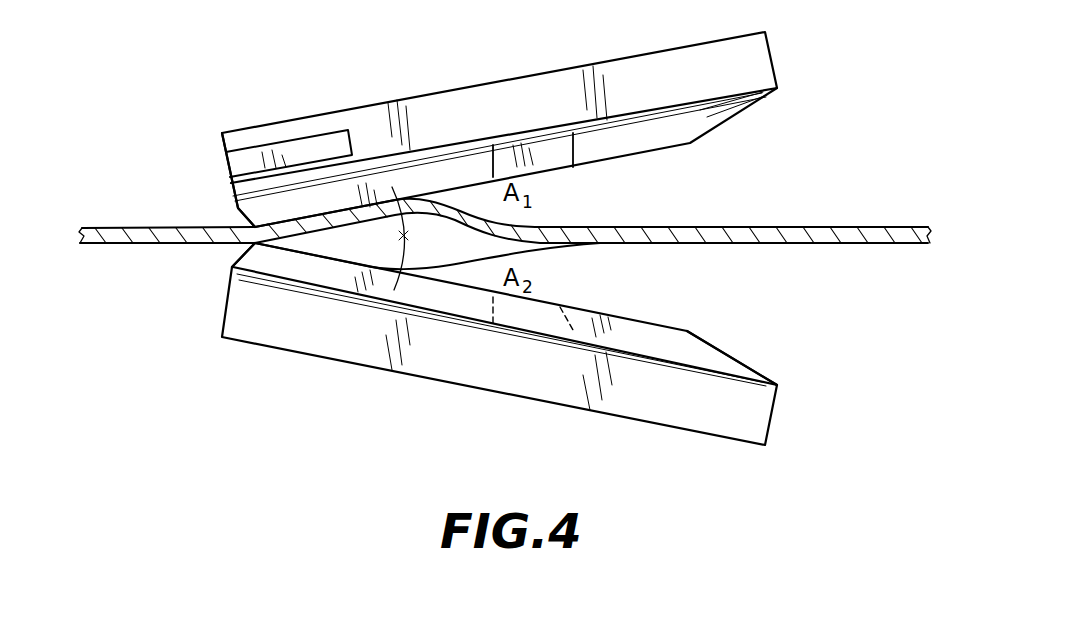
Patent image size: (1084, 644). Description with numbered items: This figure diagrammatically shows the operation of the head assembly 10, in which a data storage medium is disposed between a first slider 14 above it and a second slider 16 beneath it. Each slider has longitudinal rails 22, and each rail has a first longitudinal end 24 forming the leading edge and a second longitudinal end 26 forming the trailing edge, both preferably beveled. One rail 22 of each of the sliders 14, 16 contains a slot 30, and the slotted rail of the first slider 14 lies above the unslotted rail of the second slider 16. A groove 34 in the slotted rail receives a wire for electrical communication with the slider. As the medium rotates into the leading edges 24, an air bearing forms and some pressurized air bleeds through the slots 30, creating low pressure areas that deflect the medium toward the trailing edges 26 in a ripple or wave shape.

The head assembly 10 is at (383, 52).
The first slider 14 is at (757, 63).
The second slider 16 is at (715, 422).
The longitudinal rails 22 is at (427, 180).
The first longitudinal end 24 is at (713, 343).
The second longitudinal end 26 is at (240, 215).
The slot 30 is at (538, 147).
The groove 34 is at (238, 167).